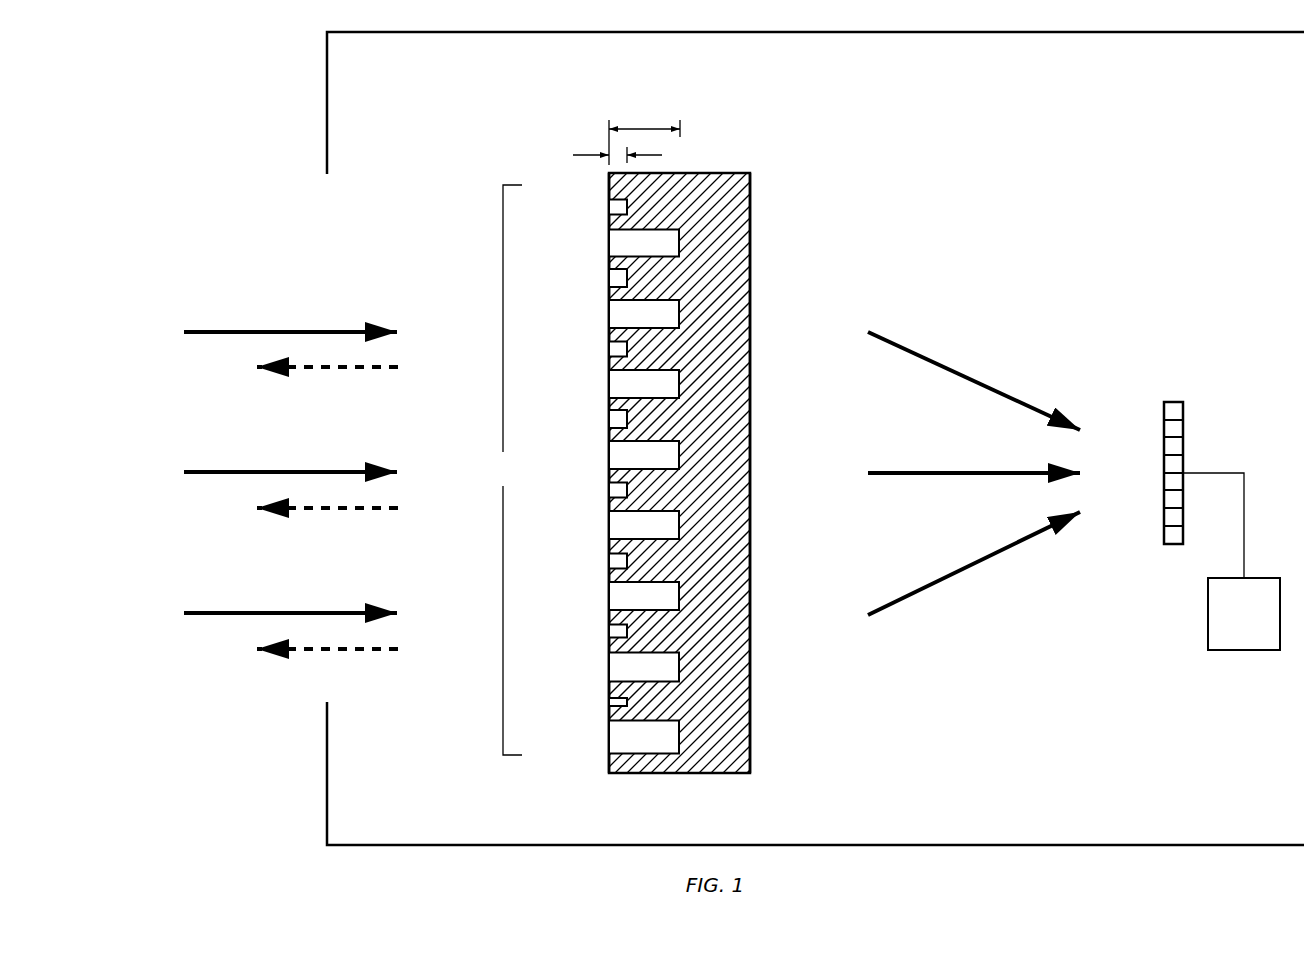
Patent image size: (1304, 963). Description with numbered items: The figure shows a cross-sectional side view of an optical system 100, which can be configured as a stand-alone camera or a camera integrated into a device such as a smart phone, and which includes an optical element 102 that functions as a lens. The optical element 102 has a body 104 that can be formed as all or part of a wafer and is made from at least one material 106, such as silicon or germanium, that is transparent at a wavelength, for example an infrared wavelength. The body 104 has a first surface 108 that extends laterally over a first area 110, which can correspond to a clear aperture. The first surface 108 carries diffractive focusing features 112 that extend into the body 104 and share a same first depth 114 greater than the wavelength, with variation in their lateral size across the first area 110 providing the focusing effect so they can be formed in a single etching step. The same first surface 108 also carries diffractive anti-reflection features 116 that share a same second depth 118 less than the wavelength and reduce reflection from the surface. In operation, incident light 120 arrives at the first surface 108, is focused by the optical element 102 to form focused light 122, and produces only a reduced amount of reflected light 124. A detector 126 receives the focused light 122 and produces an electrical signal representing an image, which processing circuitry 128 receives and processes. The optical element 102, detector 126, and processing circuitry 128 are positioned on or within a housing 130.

The optical system 100 is at (659, 438).
The optical element 102 is at (659, 460).
The body 104 is at (751, 257).
The material 106 is at (728, 182).
The first surface 108 is at (607, 776).
The first area 110 is at (503, 470).
The diffractive focusing features 112 is at (609, 243).
The first depth 114 is at (641, 128).
The diffractive anti-reflection features 116 is at (609, 207).
The second depth 118 is at (586, 155).
The incident light 120 is at (318, 329).
The focused light 122 is at (1022, 400).
The reflected light 124 is at (320, 370).
The detector 126 is at (1173, 400).
The processing circuitry 128 is at (1243, 652).
The housing 130 is at (397, 845).